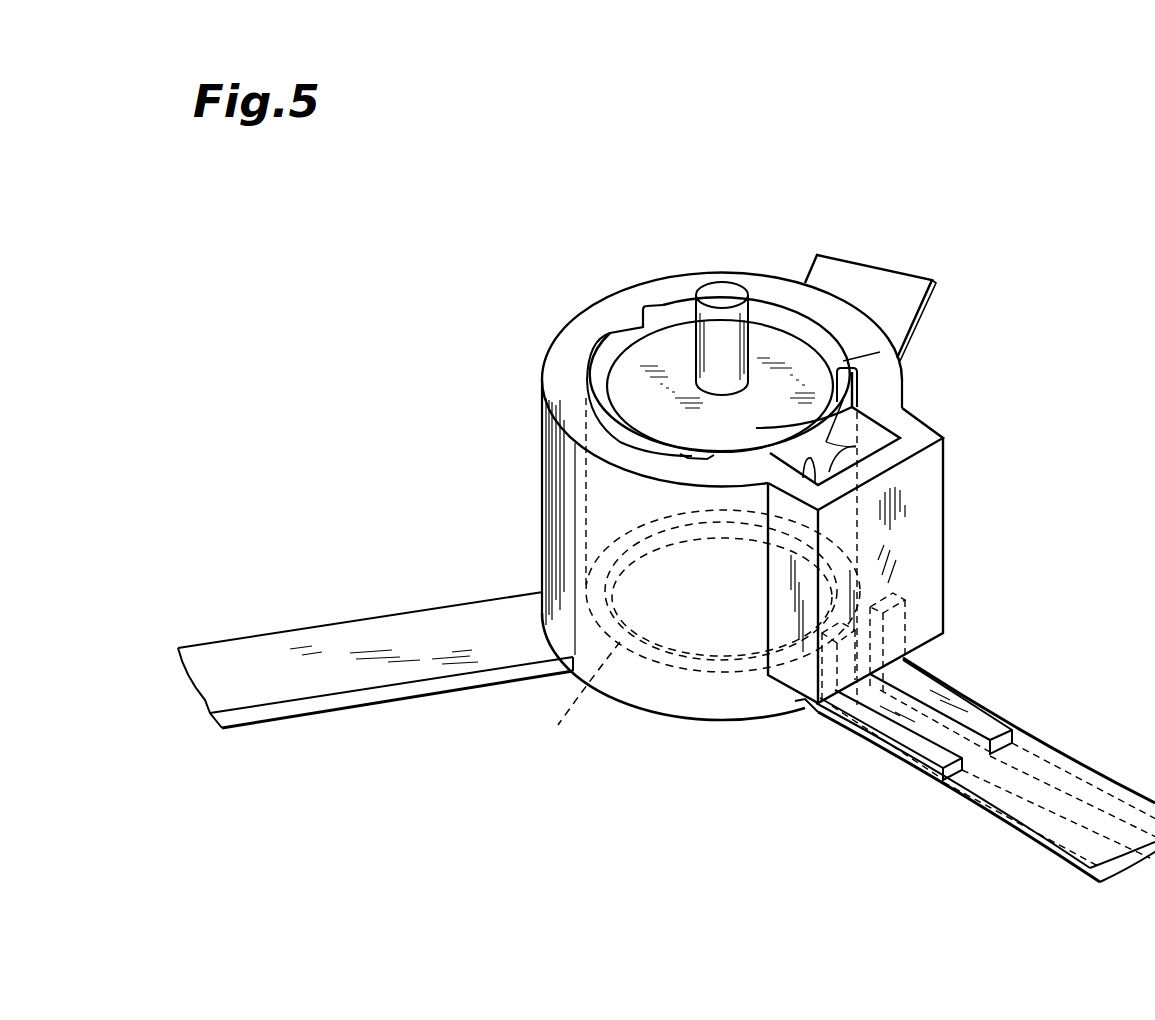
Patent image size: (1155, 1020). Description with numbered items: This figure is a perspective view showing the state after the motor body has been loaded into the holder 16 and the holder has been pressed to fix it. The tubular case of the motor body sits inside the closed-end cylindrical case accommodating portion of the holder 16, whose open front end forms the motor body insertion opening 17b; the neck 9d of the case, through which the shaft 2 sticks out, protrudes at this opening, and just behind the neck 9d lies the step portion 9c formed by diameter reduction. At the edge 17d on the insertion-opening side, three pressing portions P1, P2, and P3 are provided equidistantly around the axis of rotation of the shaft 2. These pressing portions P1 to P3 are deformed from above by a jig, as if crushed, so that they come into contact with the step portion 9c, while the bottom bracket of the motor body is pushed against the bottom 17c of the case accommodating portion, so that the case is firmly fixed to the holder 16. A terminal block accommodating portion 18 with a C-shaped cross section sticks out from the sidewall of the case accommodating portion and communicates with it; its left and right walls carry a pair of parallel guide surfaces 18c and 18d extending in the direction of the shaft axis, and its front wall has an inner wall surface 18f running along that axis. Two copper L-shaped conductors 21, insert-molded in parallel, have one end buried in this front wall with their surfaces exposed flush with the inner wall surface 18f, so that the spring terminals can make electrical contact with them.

The shaft 2 is at (716, 292).
The step portion 9c is at (827, 437).
The neck 9d is at (672, 331).
The holder 16 is at (916, 372).
The motor body insertion opening 17b is at (782, 288).
The bottom 17c is at (618, 653).
The edge 17d is at (616, 446).
The terminal block accommodating portion 18 is at (946, 418).
The guide surface 18c is at (805, 465).
The guide surface 18d is at (903, 440).
The inner wall surface 18f is at (886, 447).
The conductor 21 is at (987, 722).
The pressing portion P1 is at (622, 316).
The pressing portion P2 is at (680, 459).
The pressing portion P3 is at (871, 342).